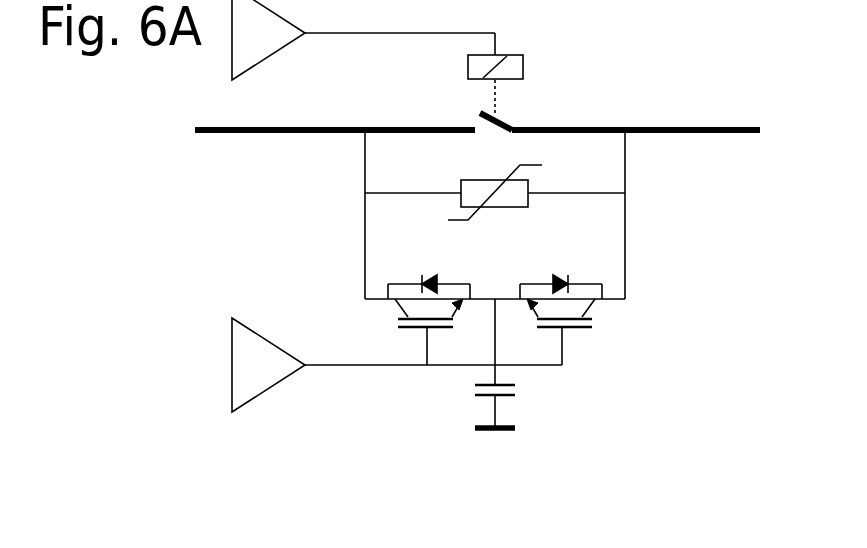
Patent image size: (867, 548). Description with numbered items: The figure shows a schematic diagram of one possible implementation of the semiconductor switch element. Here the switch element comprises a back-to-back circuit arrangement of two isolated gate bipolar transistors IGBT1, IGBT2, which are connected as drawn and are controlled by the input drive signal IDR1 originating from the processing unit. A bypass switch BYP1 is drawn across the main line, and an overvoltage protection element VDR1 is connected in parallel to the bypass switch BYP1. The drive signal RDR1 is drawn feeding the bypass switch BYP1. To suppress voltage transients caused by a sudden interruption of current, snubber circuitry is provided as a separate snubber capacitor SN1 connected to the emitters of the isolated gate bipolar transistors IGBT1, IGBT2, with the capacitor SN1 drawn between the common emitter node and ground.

The relay driver RDR1 is at (363, 40).
The bypass switch BYP1 is at (521, 92).
The overvoltage protection element VDR1 is at (521, 192).
The isolated gate bipolar transistor IGBT1 is at (429, 307).
The isolated gate bipolar transistor IGBT2 is at (561, 307).
The input drive signal IDR1 is at (268, 365).
The snubber capacitor SN1 is at (517, 404).